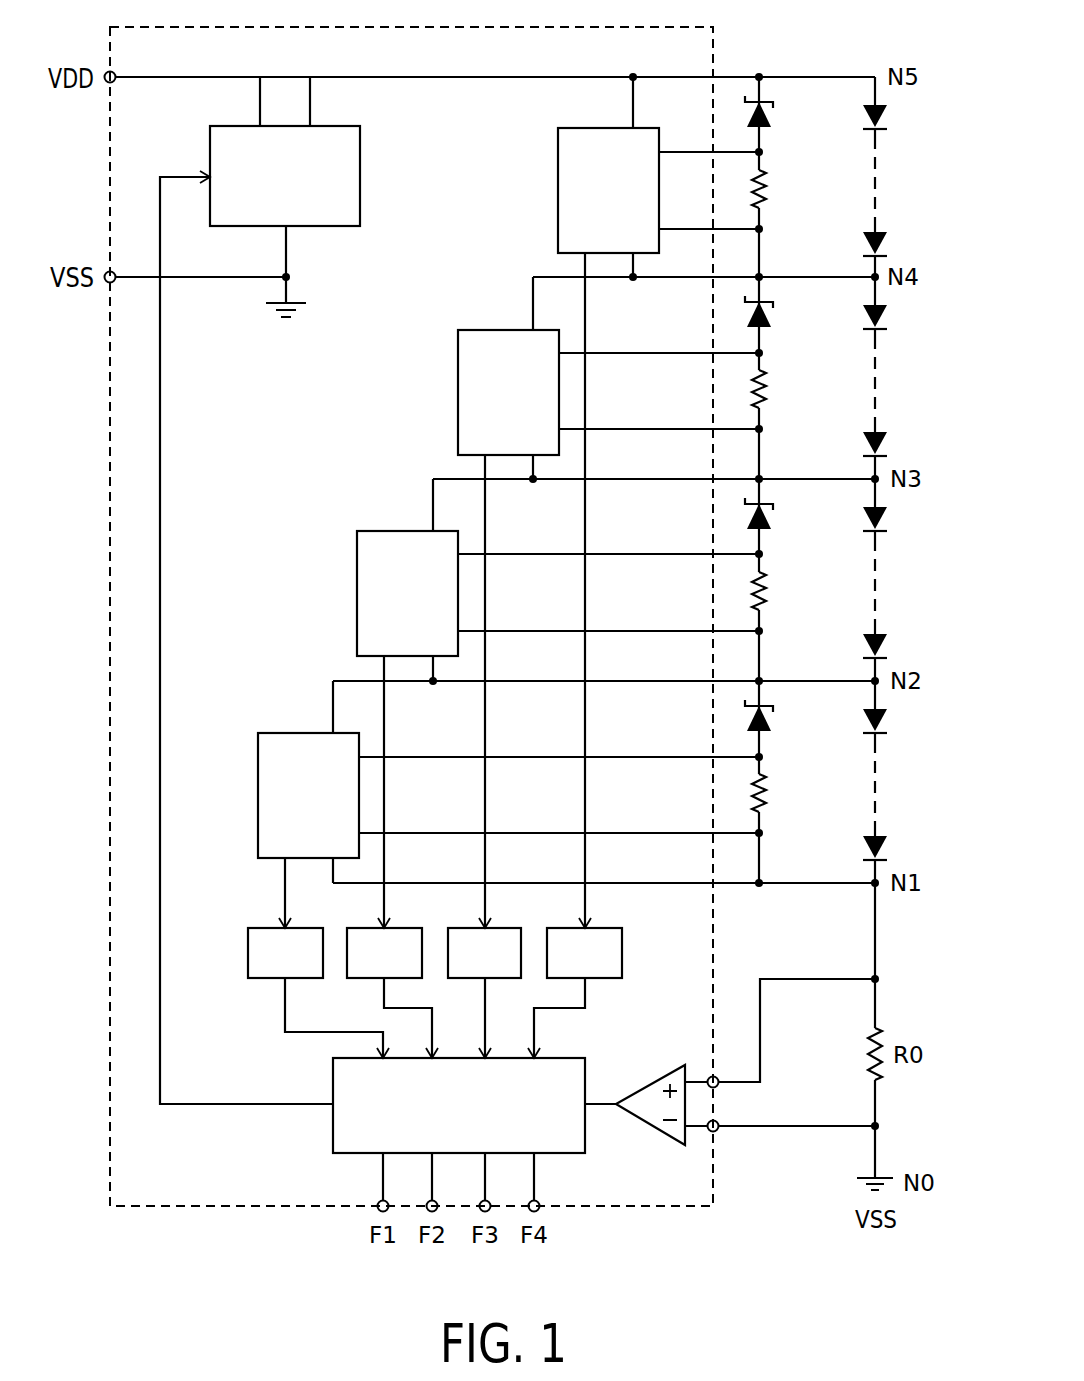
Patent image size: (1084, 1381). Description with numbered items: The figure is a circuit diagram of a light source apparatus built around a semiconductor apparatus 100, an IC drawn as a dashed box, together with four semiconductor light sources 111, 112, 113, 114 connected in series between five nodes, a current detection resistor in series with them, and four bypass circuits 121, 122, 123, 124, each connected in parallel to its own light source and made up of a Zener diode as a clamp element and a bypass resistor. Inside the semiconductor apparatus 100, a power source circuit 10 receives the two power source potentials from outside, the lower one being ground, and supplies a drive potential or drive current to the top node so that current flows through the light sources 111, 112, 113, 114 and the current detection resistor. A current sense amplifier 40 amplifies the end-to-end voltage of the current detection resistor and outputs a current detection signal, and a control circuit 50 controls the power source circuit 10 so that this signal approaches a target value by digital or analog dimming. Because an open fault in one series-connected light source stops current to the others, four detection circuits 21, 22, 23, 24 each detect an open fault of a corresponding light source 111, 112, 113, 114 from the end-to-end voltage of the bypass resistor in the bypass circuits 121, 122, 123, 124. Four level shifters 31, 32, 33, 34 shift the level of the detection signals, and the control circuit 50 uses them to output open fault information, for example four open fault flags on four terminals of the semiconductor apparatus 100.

The semiconductor apparatus 100 is at (418, 27).
The power source circuit 10 is at (332, 126).
The detection circuit 21 is at (290, 733).
The detection circuit 22 is at (388, 531).
The detection circuit 23 is at (488, 330).
The detection circuit 24 is at (590, 128).
The level shifter 31 is at (297, 928).
The level shifter 32 is at (397, 928).
The level shifter 33 is at (497, 928).
The level shifter 34 is at (597, 928).
The current sense amplifier 40 is at (640, 1119).
The control circuit 50 is at (587, 1076).
The semiconductor light source 111 is at (897, 701).
The semiconductor light source 112 is at (897, 499).
The semiconductor light source 113 is at (897, 297).
The semiconductor light source 114 is at (897, 97).
The bypass circuit 121 is at (807, 701).
The bypass circuit 122 is at (807, 499).
The bypass circuit 123 is at (807, 297).
The bypass circuit 124 is at (807, 97).